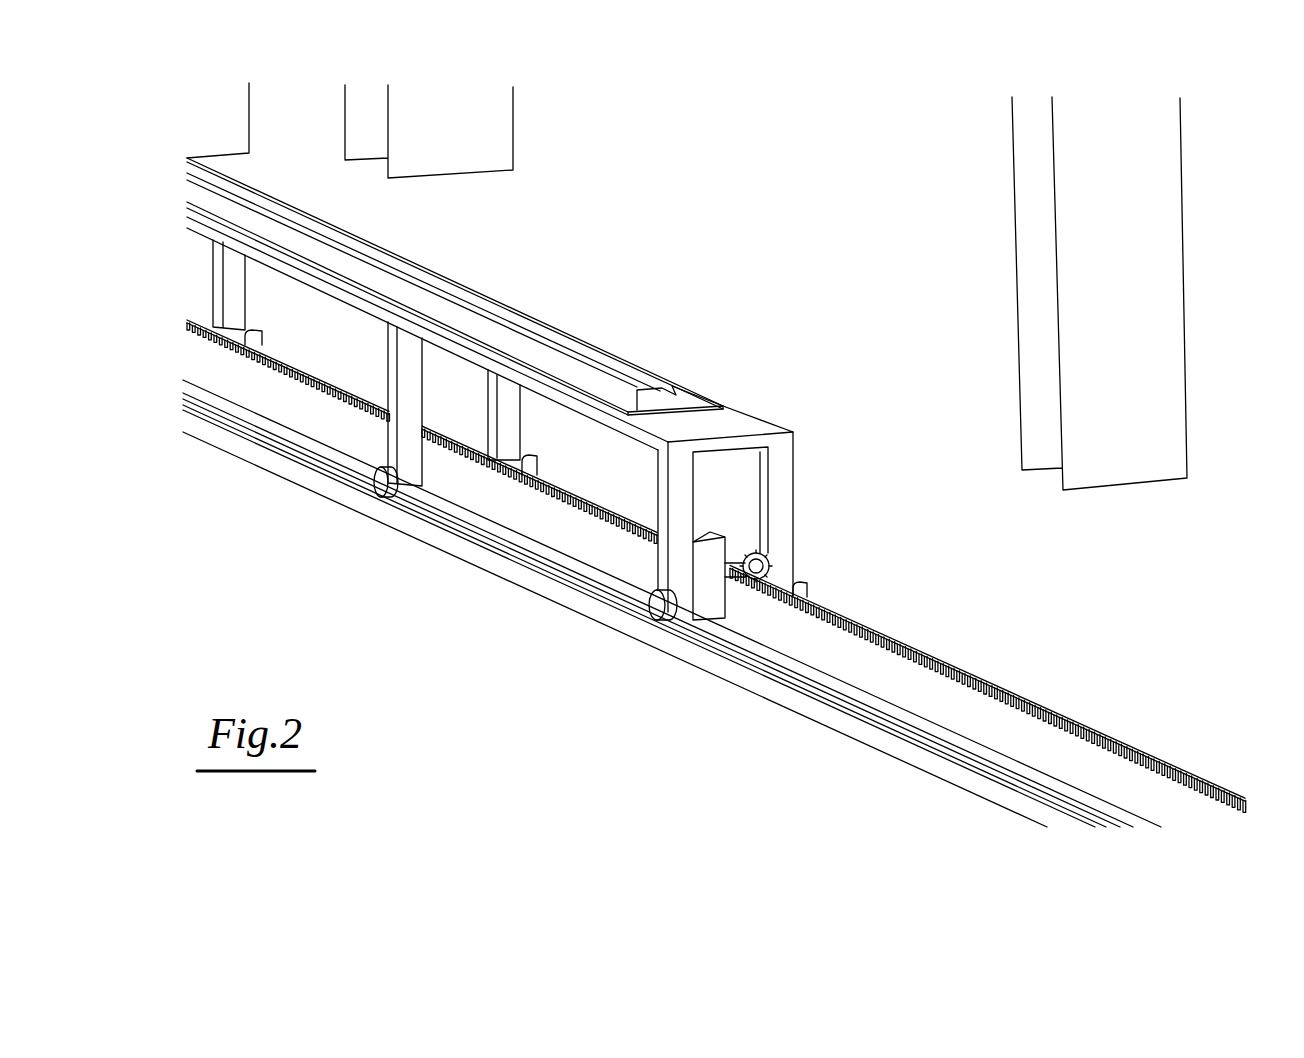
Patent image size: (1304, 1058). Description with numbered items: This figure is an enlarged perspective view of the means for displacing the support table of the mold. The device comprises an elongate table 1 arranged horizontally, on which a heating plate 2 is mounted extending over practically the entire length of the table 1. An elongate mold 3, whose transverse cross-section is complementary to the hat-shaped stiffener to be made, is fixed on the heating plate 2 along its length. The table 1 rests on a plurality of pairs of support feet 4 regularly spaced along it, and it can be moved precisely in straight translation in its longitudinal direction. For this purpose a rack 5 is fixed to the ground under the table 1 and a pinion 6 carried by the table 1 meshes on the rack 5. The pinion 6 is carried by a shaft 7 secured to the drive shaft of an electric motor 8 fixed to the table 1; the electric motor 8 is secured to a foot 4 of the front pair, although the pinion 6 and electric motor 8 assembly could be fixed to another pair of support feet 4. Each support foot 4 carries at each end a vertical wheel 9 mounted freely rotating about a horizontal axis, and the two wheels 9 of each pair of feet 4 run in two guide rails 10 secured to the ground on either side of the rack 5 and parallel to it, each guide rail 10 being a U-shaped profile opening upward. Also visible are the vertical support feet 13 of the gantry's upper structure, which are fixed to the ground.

The elongate table 1 is at (752, 415).
The heating plate 2 is at (708, 403).
The elongate mold 3 is at (600, 363).
The support feet 4 is at (232, 280).
The rack 5 is at (947, 703).
The pinion 6 is at (765, 558).
The shaft 7 is at (728, 585).
The electric motor 8 is at (705, 590).
The vertical wheel 9 is at (262, 338).
The guide rails 10 is at (875, 740).
The vertical support feet 13 is at (495, 140).